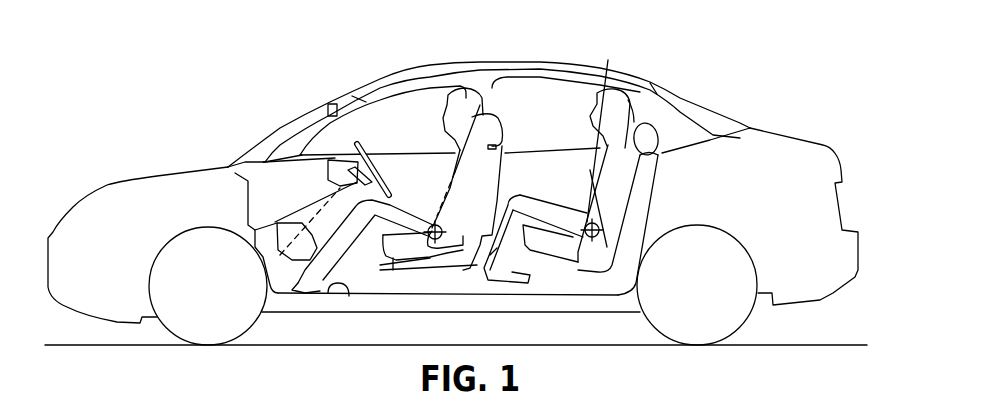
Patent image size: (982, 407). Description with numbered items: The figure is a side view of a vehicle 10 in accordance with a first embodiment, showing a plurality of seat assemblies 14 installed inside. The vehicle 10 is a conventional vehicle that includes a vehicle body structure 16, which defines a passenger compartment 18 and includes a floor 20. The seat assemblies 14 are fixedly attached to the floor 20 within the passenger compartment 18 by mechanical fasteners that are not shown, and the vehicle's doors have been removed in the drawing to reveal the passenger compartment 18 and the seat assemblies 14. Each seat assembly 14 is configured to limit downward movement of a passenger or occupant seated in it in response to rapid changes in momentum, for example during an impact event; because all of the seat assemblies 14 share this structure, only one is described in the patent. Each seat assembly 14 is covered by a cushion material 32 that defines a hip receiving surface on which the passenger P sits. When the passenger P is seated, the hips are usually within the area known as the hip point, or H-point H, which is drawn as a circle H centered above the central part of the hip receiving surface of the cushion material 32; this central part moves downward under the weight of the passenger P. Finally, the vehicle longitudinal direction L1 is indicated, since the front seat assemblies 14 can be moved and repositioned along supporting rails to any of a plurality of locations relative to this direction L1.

The vehicle 10 is at (740, 70).
The seat assembly 14 is at (617, 173).
The vehicle body structure 16 is at (564, 54).
The passenger compartment 18 is at (389, 122).
The floor 20 is at (349, 296).
The cushion material 32 is at (432, 257).
The passenger P is at (467, 107).
The H-point H is at (430, 227).
The vehicle longitudinal direction L1 is at (839, 373).